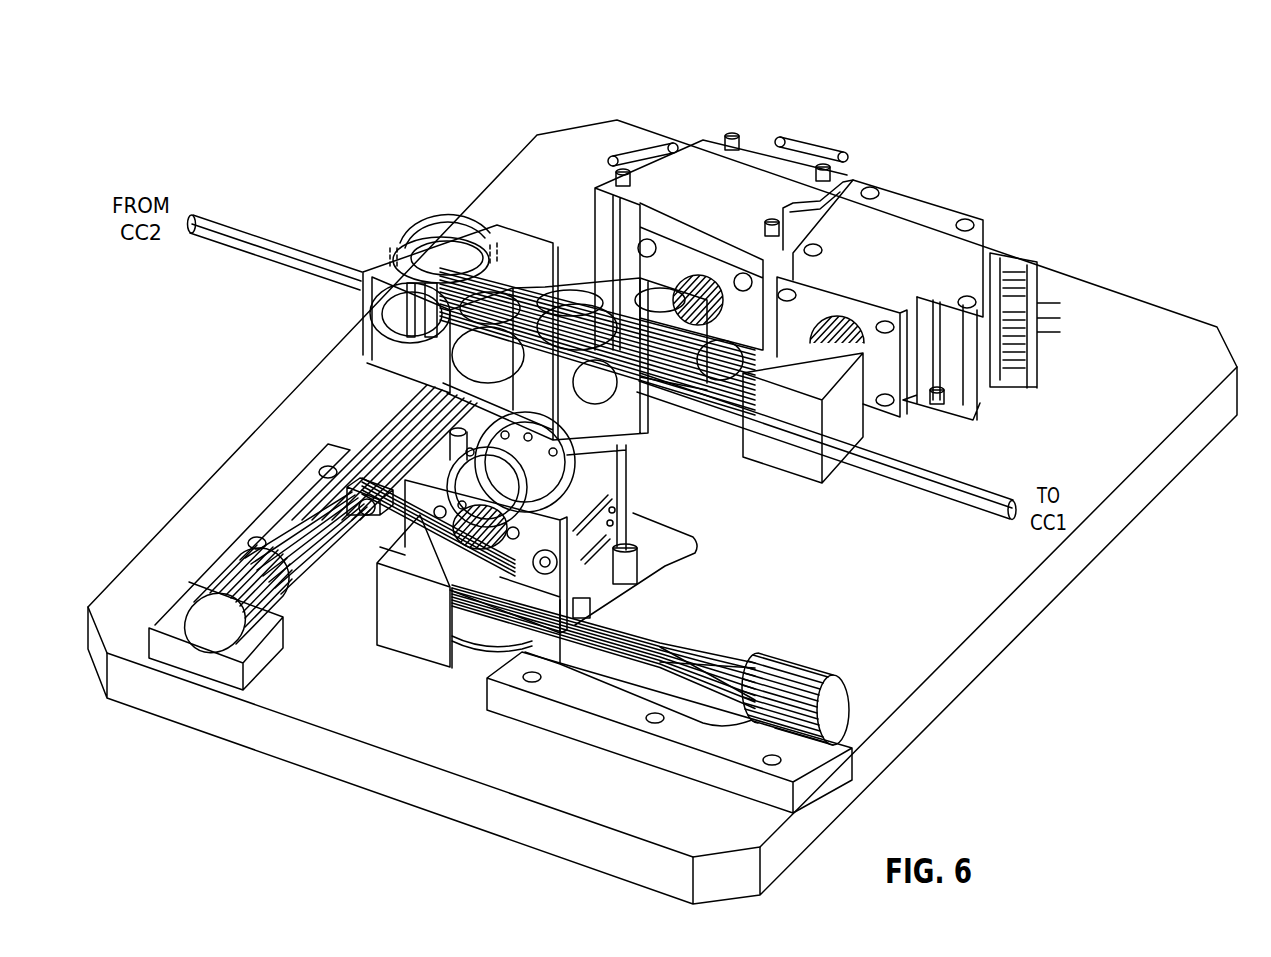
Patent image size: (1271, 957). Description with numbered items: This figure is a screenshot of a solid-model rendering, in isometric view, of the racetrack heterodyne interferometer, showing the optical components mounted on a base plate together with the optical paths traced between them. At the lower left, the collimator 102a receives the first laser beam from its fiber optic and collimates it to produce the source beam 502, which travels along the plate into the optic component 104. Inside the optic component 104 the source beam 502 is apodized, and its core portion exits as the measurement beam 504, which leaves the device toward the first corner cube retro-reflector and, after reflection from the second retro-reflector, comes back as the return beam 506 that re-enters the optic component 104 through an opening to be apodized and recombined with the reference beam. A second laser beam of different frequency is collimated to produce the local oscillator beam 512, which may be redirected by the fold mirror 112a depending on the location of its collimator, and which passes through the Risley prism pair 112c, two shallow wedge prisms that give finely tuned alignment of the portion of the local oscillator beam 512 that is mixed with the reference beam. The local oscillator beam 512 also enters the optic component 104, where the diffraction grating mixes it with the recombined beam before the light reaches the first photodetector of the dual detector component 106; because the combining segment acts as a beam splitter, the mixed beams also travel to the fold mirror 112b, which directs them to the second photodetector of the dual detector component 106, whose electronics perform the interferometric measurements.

The return beam 506 is at (237, 232).
The measurement beam 504 is at (888, 480).
The optic component 104 is at (503, 210).
The dual detector component 106 is at (934, 166).
The source beam 502 is at (387, 418).
The local oscillator beam 512 is at (630, 423).
The fold mirror 112a is at (410, 660).
The fold mirror 112b is at (788, 470).
The Risley prism pair 112c is at (672, 570).
The collimator 102a is at (310, 577).